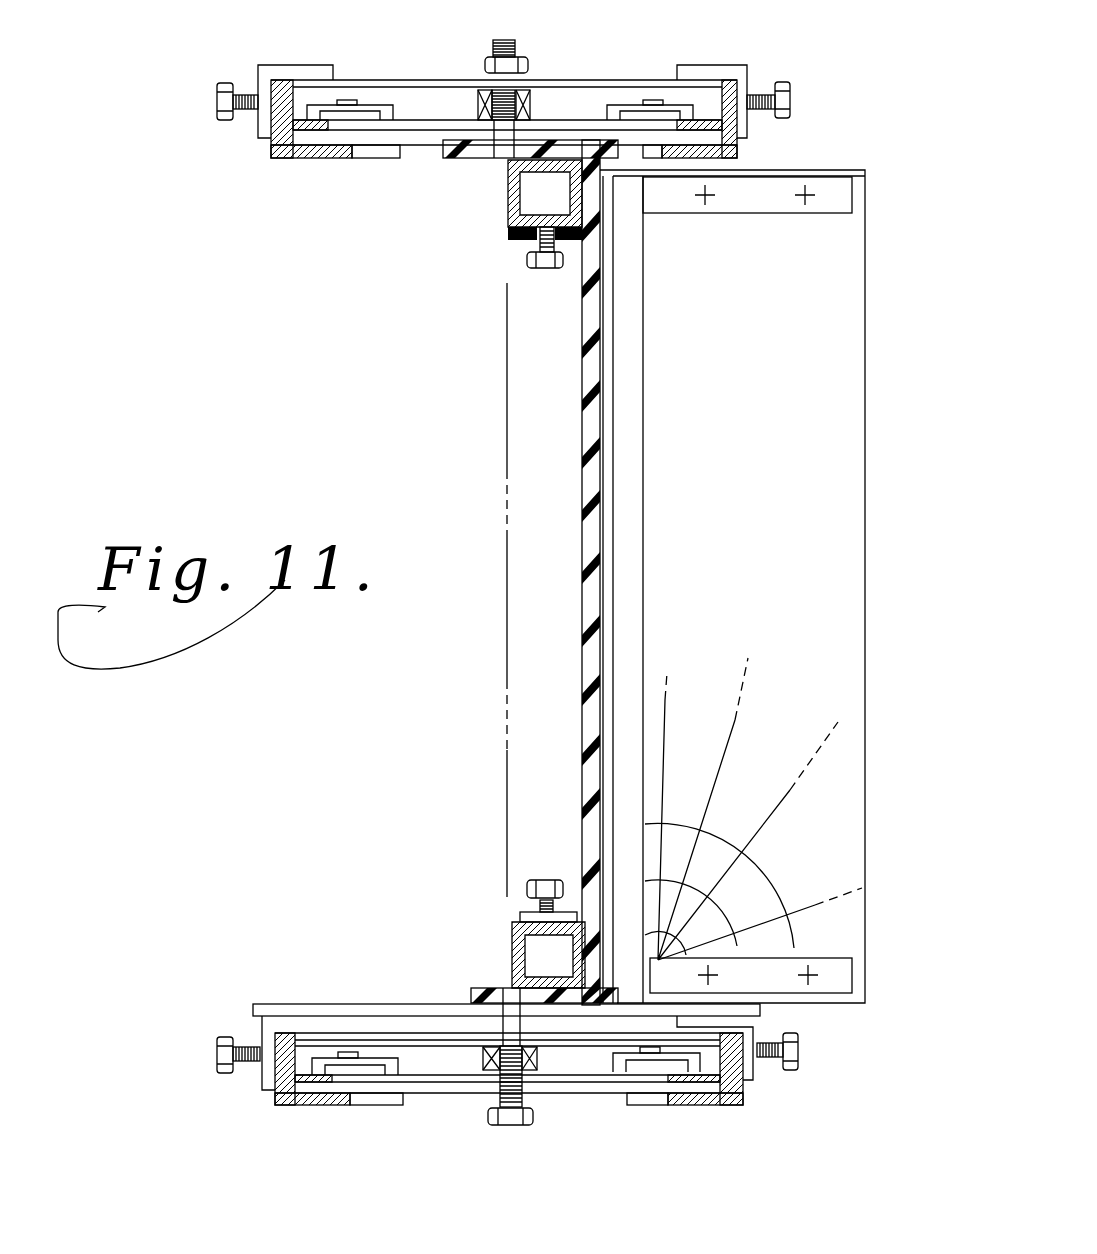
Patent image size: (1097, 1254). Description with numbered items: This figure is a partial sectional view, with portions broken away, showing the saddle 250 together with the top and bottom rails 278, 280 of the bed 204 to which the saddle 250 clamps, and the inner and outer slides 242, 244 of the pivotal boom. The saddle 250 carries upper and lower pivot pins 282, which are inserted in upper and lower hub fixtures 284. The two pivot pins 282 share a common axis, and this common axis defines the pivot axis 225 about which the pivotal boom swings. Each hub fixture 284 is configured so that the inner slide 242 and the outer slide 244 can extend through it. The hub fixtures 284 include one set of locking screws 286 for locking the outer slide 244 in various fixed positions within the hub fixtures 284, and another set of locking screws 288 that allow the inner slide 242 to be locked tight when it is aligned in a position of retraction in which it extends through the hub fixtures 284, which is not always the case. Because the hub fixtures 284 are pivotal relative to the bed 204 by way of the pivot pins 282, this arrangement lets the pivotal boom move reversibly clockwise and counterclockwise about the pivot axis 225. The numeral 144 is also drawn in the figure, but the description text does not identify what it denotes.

The hub fixture 284 is at (390, 112).
The pivot pin 282 is at (520, 52).
The inner slide 242 is at (715, 100).
The locking screw 286 is at (218, 100).
The locking screw 288 is at (680, 112).
The outer slide 244 is at (272, 158).
The flange 144 is at (268, 1098).
The top rail 278 is at (540, 176).
The bottom rail 280 is at (550, 985).
The saddle 250 is at (352, 352).
The pivot axis 225 is at (507, 600).
The bed 204 is at (240, 936).